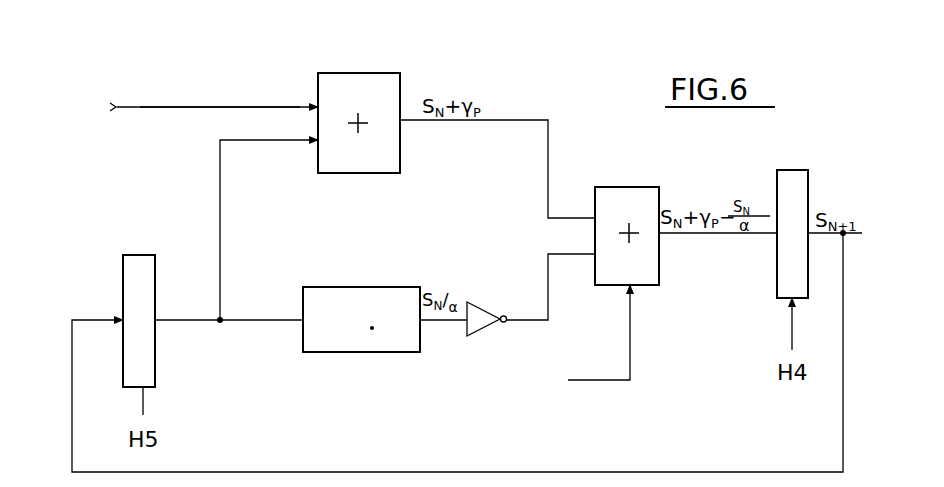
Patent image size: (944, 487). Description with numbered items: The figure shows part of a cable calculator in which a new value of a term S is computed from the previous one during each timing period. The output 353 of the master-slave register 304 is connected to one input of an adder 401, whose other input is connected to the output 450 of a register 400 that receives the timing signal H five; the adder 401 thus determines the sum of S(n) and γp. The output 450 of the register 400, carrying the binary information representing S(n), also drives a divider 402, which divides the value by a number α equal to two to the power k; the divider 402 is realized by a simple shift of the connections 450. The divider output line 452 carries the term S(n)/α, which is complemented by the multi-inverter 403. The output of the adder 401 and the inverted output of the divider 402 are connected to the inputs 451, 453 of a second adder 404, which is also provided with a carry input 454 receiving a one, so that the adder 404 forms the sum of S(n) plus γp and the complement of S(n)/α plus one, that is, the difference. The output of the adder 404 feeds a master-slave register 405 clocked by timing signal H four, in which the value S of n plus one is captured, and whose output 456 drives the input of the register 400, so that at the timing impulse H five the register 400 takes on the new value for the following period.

The master-slave register 304 is at (191, 107).
The output of the master-slave register 353 is at (222, 106).
The register 400 is at (143, 258).
The adder 401 is at (355, 88).
The divider 402 is at (361, 319).
The inverter 403 is at (485, 302).
The adder 404 is at (628, 193).
The master-slave register 405 is at (795, 183).
The output of the register 450 is at (197, 318).
The input of the adder 451 is at (530, 118).
The divider output line 452 is at (452, 323).
The input of the adder 453 is at (548, 298).
The carry input 454 is at (668, 360).
The output of the master-slave register 456 is at (843, 238).